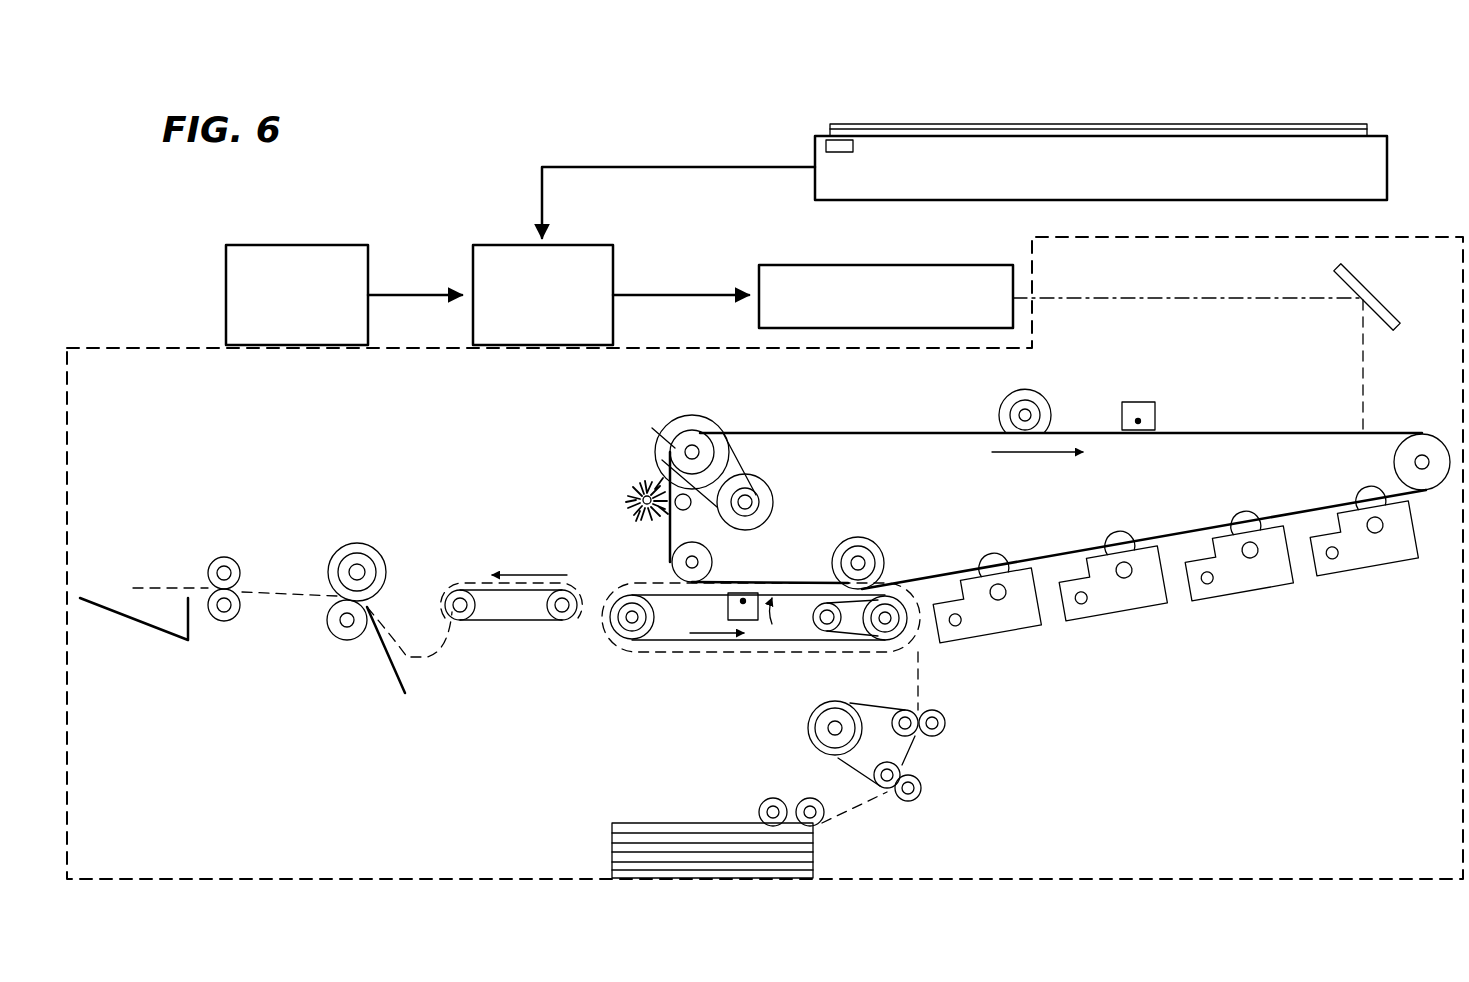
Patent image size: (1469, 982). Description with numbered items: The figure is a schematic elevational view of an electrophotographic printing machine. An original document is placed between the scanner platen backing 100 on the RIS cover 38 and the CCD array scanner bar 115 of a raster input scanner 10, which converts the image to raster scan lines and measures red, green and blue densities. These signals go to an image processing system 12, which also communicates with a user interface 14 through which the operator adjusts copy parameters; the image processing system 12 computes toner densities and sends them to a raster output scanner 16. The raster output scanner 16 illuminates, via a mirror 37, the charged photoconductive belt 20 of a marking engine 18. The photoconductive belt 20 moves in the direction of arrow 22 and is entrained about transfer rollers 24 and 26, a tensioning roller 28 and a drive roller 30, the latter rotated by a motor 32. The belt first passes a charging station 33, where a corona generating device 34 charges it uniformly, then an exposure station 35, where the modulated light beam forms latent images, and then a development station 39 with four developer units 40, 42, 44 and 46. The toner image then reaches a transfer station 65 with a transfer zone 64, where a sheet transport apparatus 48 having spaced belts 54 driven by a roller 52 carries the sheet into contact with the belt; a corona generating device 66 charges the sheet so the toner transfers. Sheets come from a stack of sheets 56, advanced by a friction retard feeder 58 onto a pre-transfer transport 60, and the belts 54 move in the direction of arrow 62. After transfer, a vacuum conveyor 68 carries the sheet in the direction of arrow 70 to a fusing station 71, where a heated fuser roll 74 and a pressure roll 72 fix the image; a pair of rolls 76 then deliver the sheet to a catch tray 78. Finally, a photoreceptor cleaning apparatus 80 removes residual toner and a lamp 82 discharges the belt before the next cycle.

The raster input scanner 10 is at (801, 99).
The image processing system 12 is at (599, 225).
The user interface 14 is at (343, 221).
The raster output scanner 16 is at (926, 237).
The marking engine 18 is at (1406, 213).
The photoconductive belt 20 is at (1280, 432).
The arrow 22 is at (1027, 455).
The transfer roller 24 is at (710, 570).
The transfer roller 26 is at (892, 565).
The tensioning roller 28 is at (1436, 434).
The drive roller 30 is at (690, 420).
The motor 32 is at (770, 490).
The charging station 33 is at (1178, 429).
The corona generating device 34 is at (1140, 402).
The exposure station 35 is at (1346, 429).
The mirror 37 is at (1358, 272).
The RIS cover 38 is at (1252, 124).
The development station 39 is at (1232, 713).
The developer unit 40 is at (1358, 578).
The developer unit 42 is at (1238, 590).
The developer unit 44 is at (1112, 605).
The developer unit 46 is at (990, 632).
The sheet transport apparatus 48 is at (650, 676).
The roller 52 is at (897, 652).
The belts 54 is at (780, 652).
The stack of sheets 56 is at (657, 822).
The friction retard feeder 58 is at (805, 800).
The pre-transfer transport 60 is at (920, 750).
The arrow 62 is at (718, 640).
The transfer zone 64 is at (755, 574).
The transfer station 65 is at (810, 637).
The corona generating device 66 is at (651, 617).
The vacuum conveyor 68 is at (517, 630).
The arrow 70 is at (530, 575).
The fusing station 71 is at (335, 521).
The pressure roll 72 is at (333, 625).
The heated fuser roll 74 is at (385, 570).
The pair of rolls 76 is at (232, 565).
The catch tray 78 is at (160, 640).
The photoreceptor cleaning apparatus 80 is at (624, 467).
The lamp 82 is at (1047, 400).
The scanner platen backing 100 is at (1040, 125).
The CCD array scanner bar 115 is at (840, 140).